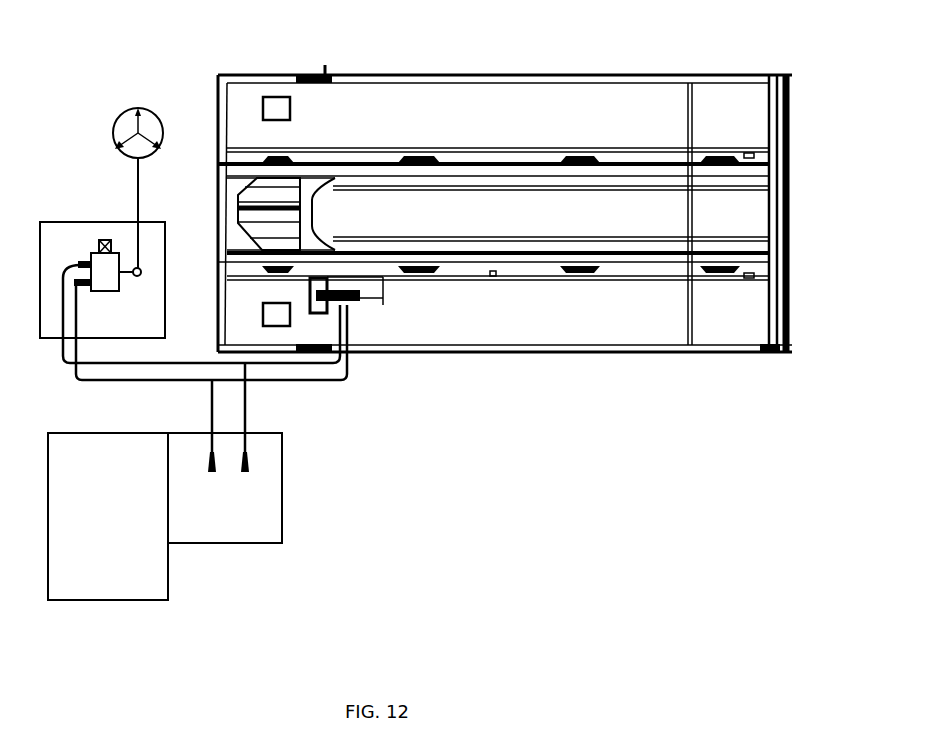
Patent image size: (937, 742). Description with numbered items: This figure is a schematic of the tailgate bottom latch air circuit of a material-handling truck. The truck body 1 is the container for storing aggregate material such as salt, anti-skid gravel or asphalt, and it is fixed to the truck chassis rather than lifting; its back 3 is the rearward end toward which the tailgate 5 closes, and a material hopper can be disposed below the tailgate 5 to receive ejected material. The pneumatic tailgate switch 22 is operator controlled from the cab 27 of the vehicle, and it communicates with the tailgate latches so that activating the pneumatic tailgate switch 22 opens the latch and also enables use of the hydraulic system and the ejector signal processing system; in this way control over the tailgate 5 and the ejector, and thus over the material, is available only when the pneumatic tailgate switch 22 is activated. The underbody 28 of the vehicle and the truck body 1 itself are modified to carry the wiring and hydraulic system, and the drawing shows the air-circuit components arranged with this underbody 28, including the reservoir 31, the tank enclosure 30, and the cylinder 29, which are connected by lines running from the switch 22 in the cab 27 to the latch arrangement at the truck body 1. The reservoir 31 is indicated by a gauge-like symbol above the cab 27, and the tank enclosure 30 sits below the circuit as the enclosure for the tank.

The truck body 1 is at (595, 352).
The back 3 is at (778, 75).
The tailgate 5 is at (775, 352).
The pneumatic tailgate switch 22 is at (103, 272).
The cab 27 is at (95, 220).
The underbody 28 is at (480, 345).
The cylinder 29 is at (360, 302).
The tank enclosure 30 is at (240, 502).
The reservoir 31 is at (133, 179).